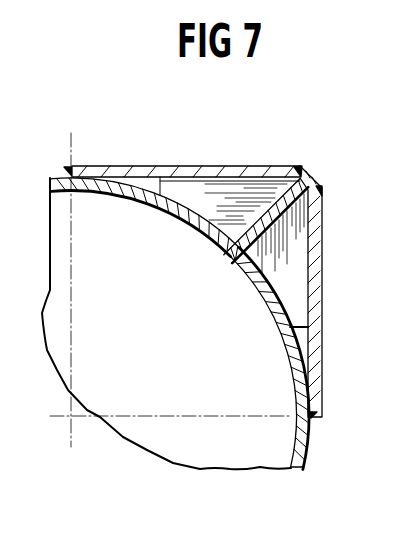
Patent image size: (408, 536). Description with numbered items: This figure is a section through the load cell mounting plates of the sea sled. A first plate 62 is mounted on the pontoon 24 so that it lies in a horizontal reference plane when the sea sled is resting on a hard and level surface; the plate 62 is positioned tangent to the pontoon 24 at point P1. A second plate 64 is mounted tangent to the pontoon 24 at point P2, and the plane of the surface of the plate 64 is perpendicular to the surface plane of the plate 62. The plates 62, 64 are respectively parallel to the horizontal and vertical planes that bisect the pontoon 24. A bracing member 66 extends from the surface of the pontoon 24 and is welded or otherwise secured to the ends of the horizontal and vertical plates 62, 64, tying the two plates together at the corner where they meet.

The pontoon 24 is at (308, 468).
The first plate 62 is at (157, 166).
The second plate 64 is at (322, 292).
The bracing member 66 is at (246, 226).
The point P1 is at (67, 168).
The point P2 is at (318, 418).